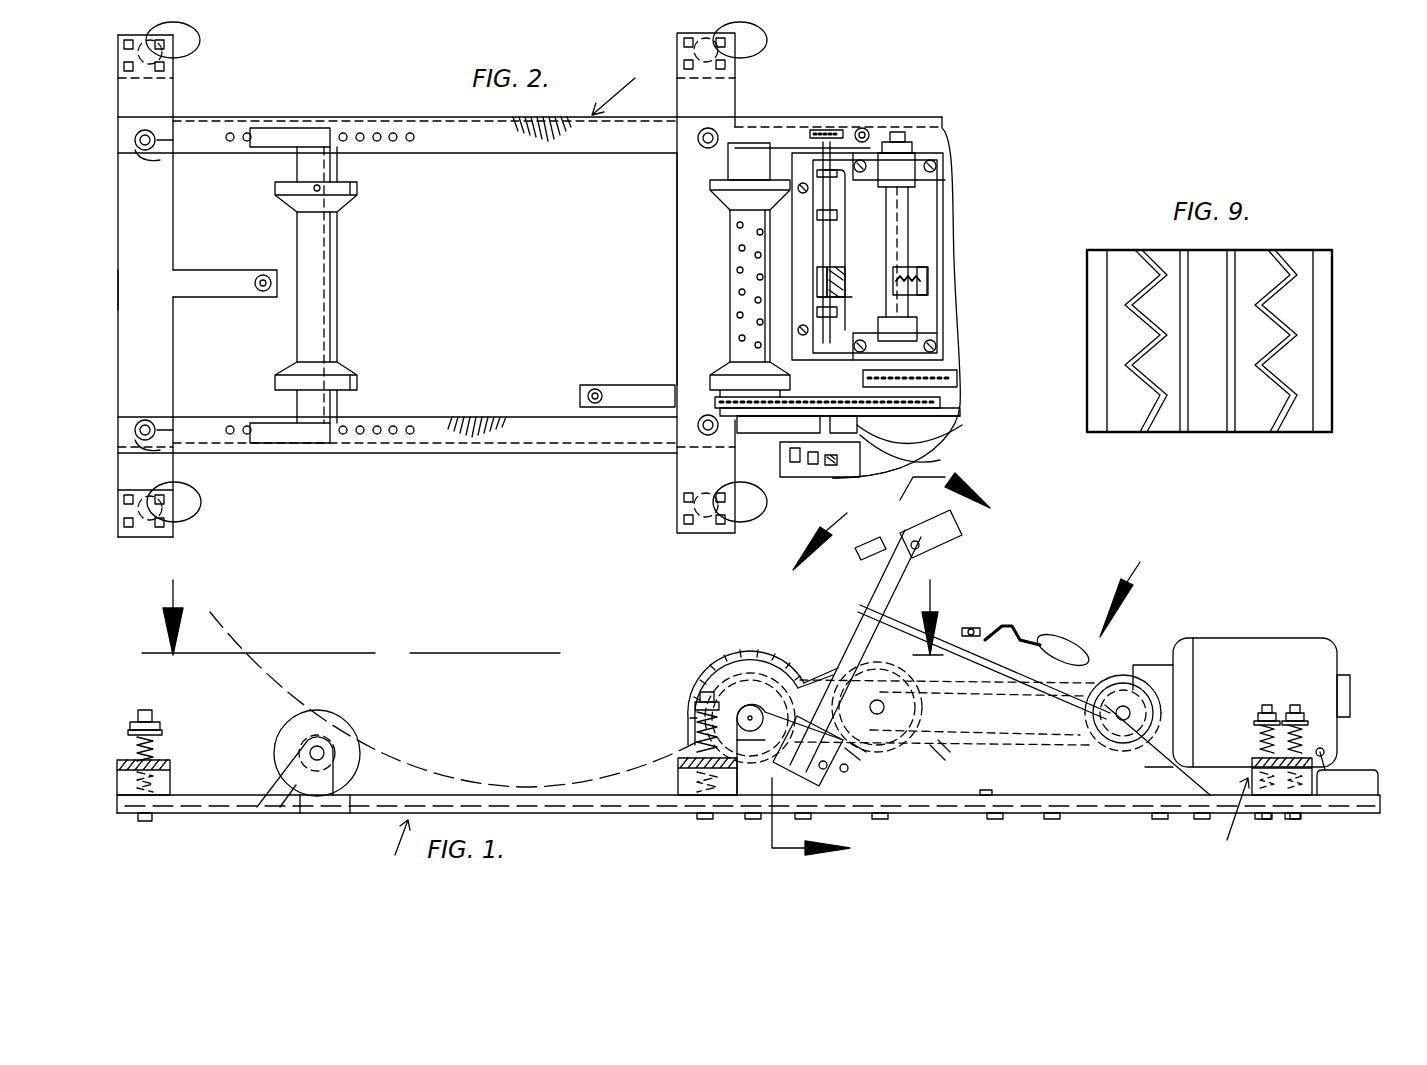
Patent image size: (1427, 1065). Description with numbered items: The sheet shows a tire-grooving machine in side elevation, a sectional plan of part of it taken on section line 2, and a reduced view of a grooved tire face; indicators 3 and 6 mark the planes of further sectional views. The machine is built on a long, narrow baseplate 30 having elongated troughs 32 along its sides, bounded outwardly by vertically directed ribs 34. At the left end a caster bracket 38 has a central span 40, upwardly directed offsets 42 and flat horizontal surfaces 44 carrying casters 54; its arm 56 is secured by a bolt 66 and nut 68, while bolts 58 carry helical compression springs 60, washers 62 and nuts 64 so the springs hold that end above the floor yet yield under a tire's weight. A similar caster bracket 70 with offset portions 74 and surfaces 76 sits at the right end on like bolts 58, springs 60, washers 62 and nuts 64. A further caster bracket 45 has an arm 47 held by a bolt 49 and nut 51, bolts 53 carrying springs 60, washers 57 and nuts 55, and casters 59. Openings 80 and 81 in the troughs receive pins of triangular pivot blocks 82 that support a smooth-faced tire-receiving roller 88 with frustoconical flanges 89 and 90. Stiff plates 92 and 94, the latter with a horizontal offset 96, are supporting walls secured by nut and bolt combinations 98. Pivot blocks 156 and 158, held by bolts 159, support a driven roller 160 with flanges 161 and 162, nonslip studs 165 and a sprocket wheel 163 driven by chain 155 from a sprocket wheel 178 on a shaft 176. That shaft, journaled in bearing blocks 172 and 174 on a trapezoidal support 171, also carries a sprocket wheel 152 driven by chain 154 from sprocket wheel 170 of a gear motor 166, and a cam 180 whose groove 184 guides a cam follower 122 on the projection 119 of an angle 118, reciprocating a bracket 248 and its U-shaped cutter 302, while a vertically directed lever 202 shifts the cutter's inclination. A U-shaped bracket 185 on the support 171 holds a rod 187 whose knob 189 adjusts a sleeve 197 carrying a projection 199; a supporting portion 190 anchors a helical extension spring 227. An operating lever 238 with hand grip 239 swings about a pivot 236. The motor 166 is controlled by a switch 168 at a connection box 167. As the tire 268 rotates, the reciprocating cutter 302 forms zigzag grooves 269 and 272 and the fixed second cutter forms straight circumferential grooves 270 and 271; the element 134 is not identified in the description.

In FIG. 1, the section line 2— 2 is at (542, 603).
In FIG. 1, the section line 3— 3 is at (891, 668).
In FIG. 1, the section line 6— 6 is at (963, 575).
In FIG. 2, the baseplate 30 is at (622, 86).
In FIG. 1, the baseplate 30 is at (391, 848).
In FIG. 2, the elongated troughs 32 is at (490, 153).
In FIG. 1, the elongated troughs 32 is at (550, 815).
In FIG. 2, the vertically directed ribs 34 is at (448, 117).
In FIG. 1, the vertically directed ribs 34 is at (510, 795).
In FIG. 2, the caster bracket 38 is at (132, 306).
In FIG. 2, the central span 40 is at (176, 352).
In FIG. 2, the upwardly directed offset portions 42 is at (175, 135).
In FIG. 1, the upwardly directed offset portions 42 is at (172, 780).
In FIG. 2, the flat horizontal surfaces 44 is at (165, 97).
In FIG. 1, the flat horizontal surfaces 44 is at (172, 765).
In FIG. 2, the caster bracket 45 is at (675, 290).
In FIG. 2, the arm 47 is at (620, 392).
In FIG. 2, the bolt 49 is at (592, 388).
In FIG. 2, the nut 51 is at (585, 396).
In FIG. 2, the bolts 53 is at (708, 127).
In FIG. 1, the bolts 53 is at (720, 705).
In FIG. 2, the casters 54 is at (202, 42).
In FIG. 2, the nuts 55 is at (738, 128).
In FIG. 1, the nuts 55 is at (720, 727).
In FIG. 2, the arm 56 is at (205, 268).
In FIG. 2, the washers 57 is at (708, 152).
In FIG. 1, the washers 57 is at (718, 733).
In FIG. 2, the bolts 58 is at (153, 143).
In FIG. 1, the bolts 58 is at (144, 710).
In FIG. 2, the casters 59 is at (768, 40).
In FIG. 1, the helical compression springs 60 is at (160, 747).
In FIG. 2, the washers 62 is at (162, 160).
In FIG. 1, the washers 62 is at (158, 730).
In FIG. 2, the nuts 64 is at (144, 152).
In FIG. 1, the nuts 64 is at (155, 720).
In FIG. 2, the bolt 66 is at (265, 275).
In FIG. 2, the nut 68 is at (265, 293).
In FIG. 1, the caster bracket 70 is at (1229, 821).
In FIG. 1, the upwardly directed offset portions 74 is at (1300, 805).
In FIG. 1, the flat horizontal surfaces 76 is at (1250, 760).
In FIG. 2, the openings 80 is at (393, 427).
In FIG. 1, the openings 80 is at (353, 820).
In FIG. 2, the openings 81 is at (392, 142).
In FIG. 2, the pivot blocks 82 is at (287, 128).
In FIG. 1, the pivot blocks 82 is at (282, 815).
In FIG. 2, the tire-receiving roller 88 is at (340, 283).
In FIG. 2, the frustoconical flange 89 is at (350, 203).
In FIG. 2, the frustoconical flange 90 is at (350, 370).
In FIG. 1, the frustoconical flange 90 is at (333, 727).
In FIG. 2, the stiff plate 92 is at (930, 117).
In FIG. 1, the stiff plate 94 is at (985, 795).
In FIG. 2, the horizontal offset 96 is at (882, 470).
In FIG. 1, the nut and bolt combinations 98 is at (1002, 820).
In FIG. 1, the angle 118 is at (897, 655).
In FIG. 1, the projection 119 is at (940, 753).
In FIG. 1, the cam follower 122 is at (945, 712).
In FIG. 2, the plate 134 is at (958, 390).
In FIG. 2, the sprocket wheel 152 is at (955, 372).
In FIG. 1, the sprocket chain 154 is at (1130, 668).
In FIG. 2, the sprocket chain 155 is at (855, 395).
In FIG. 1, the sprocket chain 155 is at (753, 660).
In FIG. 2, the pivot block 156 is at (767, 433).
In FIG. 1, the pivot block 156 is at (753, 782).
In FIG. 2, the pivot block 158 is at (765, 115).
In FIG. 1, the bolts 159 is at (773, 780).
In FIG. 2, the tire-receiving roller 160 is at (730, 262).
In FIG. 1, the tire-receiving roller 160 is at (740, 657).
In FIG. 2, the frustoconical flange 161 is at (712, 188).
In FIG. 2, the frustoconical flange 162 is at (720, 370).
In FIG. 1, the frustoconical flange 162 is at (712, 673).
In FIG. 2, the sprocket wheel 163 is at (715, 402).
In FIG. 1, the sprocket wheel 163 is at (790, 667).
In FIG. 2, the studs 165 is at (733, 327).
In FIG. 1, the studs 165 is at (728, 647).
In FIG. 1, the gear motor 166 is at (1280, 647).
In FIG. 1, the connection box 167 is at (1368, 780).
In FIG. 1, the switch 168 is at (1330, 766).
In FIG. 1, the sprocket wheel 170 is at (1150, 680).
In FIG. 2, the support 171 is at (933, 232).
In FIG. 2, the bearing block 172 is at (935, 335).
In FIG. 2, the bearing block 174 is at (918, 150).
In FIG. 2, the shaft 176 is at (903, 210).
In FIG. 1, the shaft 176 is at (885, 707).
In FIG. 2, the sprocket wheel 178 is at (960, 412).
In FIG. 1, the sprocket wheel 178 is at (880, 757).
In FIG. 2, the cam 180 is at (927, 428).
In FIG. 1, the cam 180 is at (990, 696).
In FIG. 2, the cam groove 184 is at (923, 447).
In FIG. 2, the U-shaped bracket 185 is at (838, 205).
In FIG. 2, the elongated rod 187 is at (865, 128).
In FIG. 2, the knob 189 is at (830, 128).
In FIG. 2, the supporting portion 190 is at (930, 300).
In FIG. 2, the sleeve 197 is at (847, 262).
In FIG. 2, the projection 199 is at (855, 275).
In FIG. 1, the lever 202 is at (815, 613).
In FIG. 2, the helical extension spring 227 is at (935, 285).
In FIG. 1, the pivot 236 is at (967, 627).
In FIG. 1, the operating lever 238 is at (1030, 630).
In FIG. 1, the hand grip 239 is at (1062, 645).
In FIG. 1, the bracket 248 is at (934, 532).
In FIG. 9, the tire 268 is at (1325, 340).
In FIG. 1, the tire 268 is at (417, 770).
In FIG. 9, the groove 269 is at (1150, 435).
In FIG. 9, the groove 270 is at (1188, 435).
In FIG. 9, the groove 271 is at (1232, 435).
In FIG. 9, the groove 272 is at (1282, 435).
In FIG. 1, the U-shaped cutter 302 is at (855, 536).